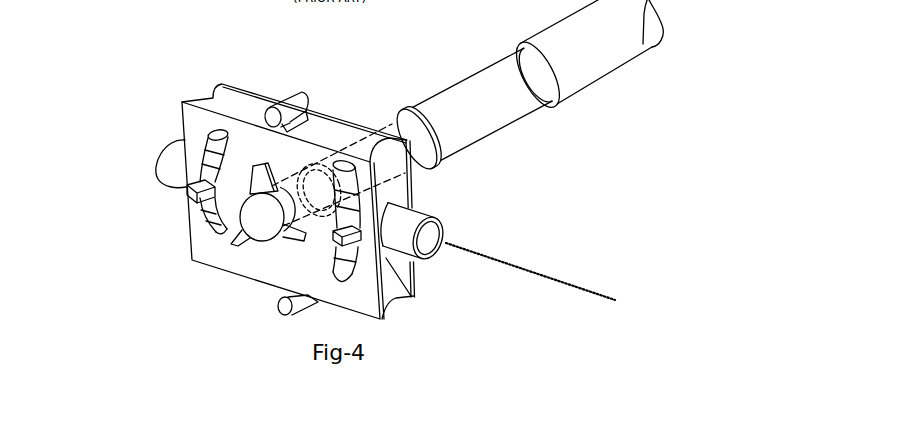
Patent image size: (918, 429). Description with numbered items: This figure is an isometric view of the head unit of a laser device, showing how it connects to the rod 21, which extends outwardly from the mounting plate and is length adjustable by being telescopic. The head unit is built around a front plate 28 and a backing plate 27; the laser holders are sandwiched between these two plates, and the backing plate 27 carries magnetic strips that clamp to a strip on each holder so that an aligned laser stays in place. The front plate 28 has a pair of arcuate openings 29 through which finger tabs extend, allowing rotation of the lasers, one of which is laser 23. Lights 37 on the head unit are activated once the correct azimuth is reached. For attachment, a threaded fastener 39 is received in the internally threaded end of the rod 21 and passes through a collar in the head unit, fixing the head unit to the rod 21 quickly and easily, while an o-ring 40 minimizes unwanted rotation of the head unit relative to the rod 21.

The rod 21 is at (593, 72).
The laser 23 is at (403, 248).
The backing plate 27 is at (233, 88).
The front plate 28 is at (192, 127).
The arcuate openings 29 is at (213, 233).
The lights 37 is at (285, 97).
The threaded fastener 39 is at (262, 234).
The o-ring 40 is at (311, 163).